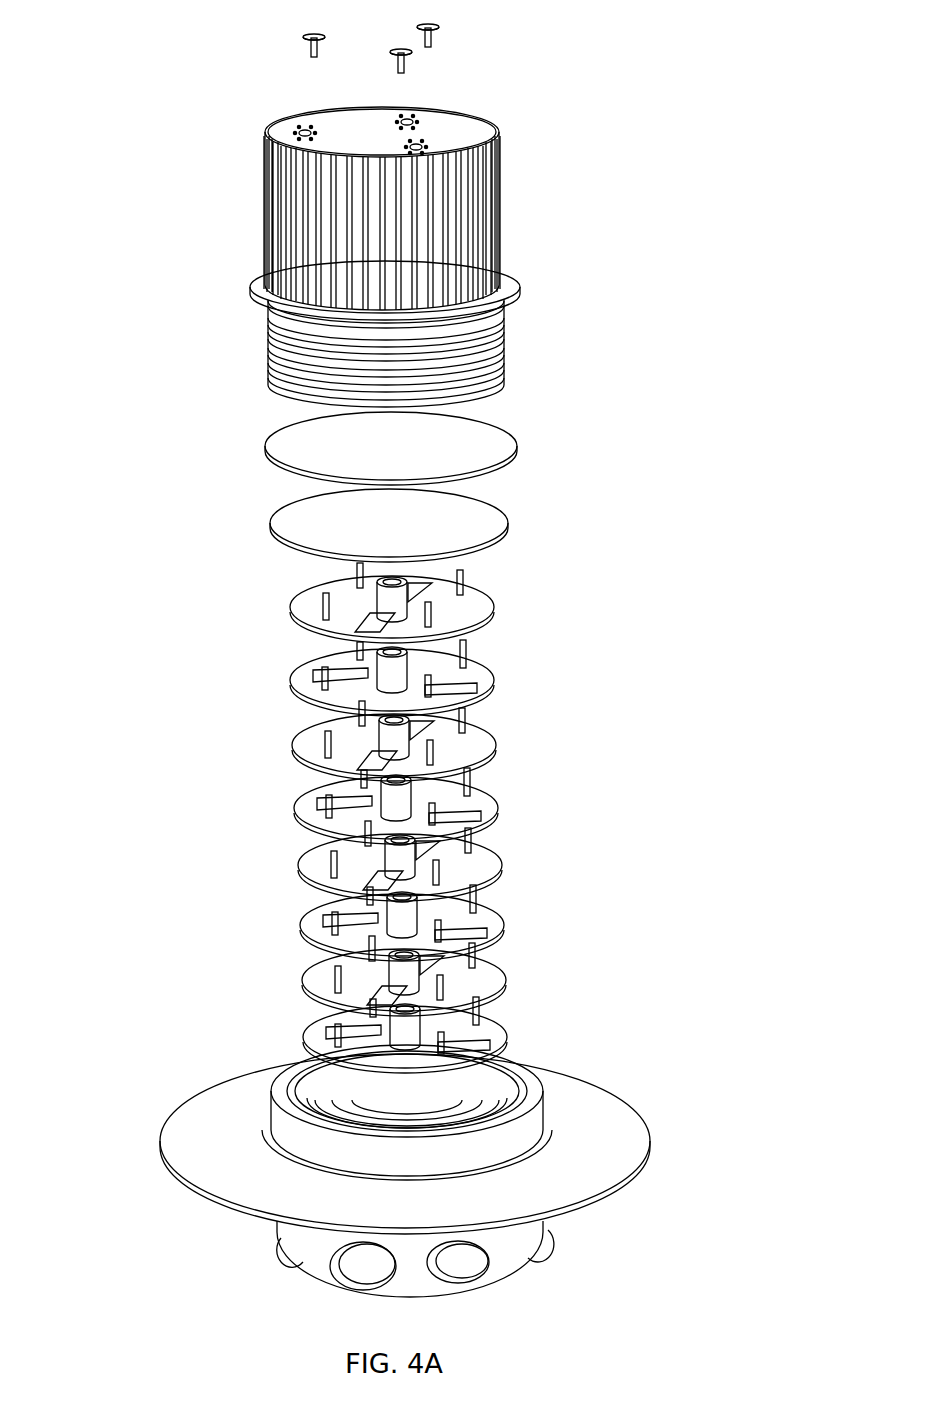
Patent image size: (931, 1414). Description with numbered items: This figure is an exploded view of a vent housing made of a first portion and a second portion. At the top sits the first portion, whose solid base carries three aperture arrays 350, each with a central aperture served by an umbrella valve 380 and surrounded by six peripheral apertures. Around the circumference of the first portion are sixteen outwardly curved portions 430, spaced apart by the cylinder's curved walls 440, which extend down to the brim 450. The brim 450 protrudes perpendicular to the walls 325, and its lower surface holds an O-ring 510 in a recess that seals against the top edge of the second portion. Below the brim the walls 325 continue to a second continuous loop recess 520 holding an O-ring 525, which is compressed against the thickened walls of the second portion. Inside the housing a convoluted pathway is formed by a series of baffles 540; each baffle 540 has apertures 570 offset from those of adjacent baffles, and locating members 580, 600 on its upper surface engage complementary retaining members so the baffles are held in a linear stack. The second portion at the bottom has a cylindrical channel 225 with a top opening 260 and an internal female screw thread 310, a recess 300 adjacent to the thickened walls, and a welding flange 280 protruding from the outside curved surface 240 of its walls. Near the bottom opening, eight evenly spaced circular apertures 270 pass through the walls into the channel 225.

The umbrella valve 380 is at (303, 37).
The aperture array 350 is at (298, 133).
The outwardly curved portion 430 is at (500, 160).
The walls 325 is at (265, 215).
The curved walls 440 is at (487, 245).
The brim 450 is at (258, 298).
The recess 520 is at (270, 322).
The recess 300 is at (268, 348).
The O-ring 510 is at (512, 443).
The O-ring 525 is at (512, 522).
The locating member 580 is at (380, 612).
The baffle 540 is at (292, 617).
The locating member 600 is at (464, 650).
The aperture 570 is at (486, 690).
The internal female screw thread 310 is at (333, 1093).
The cylindrical channel 225 is at (497, 1081).
The welding flange 280 is at (190, 1135).
The top opening 260 is at (457, 1099).
The aperture 270 is at (450, 1268).
The outside curved surface 240 is at (412, 1277).